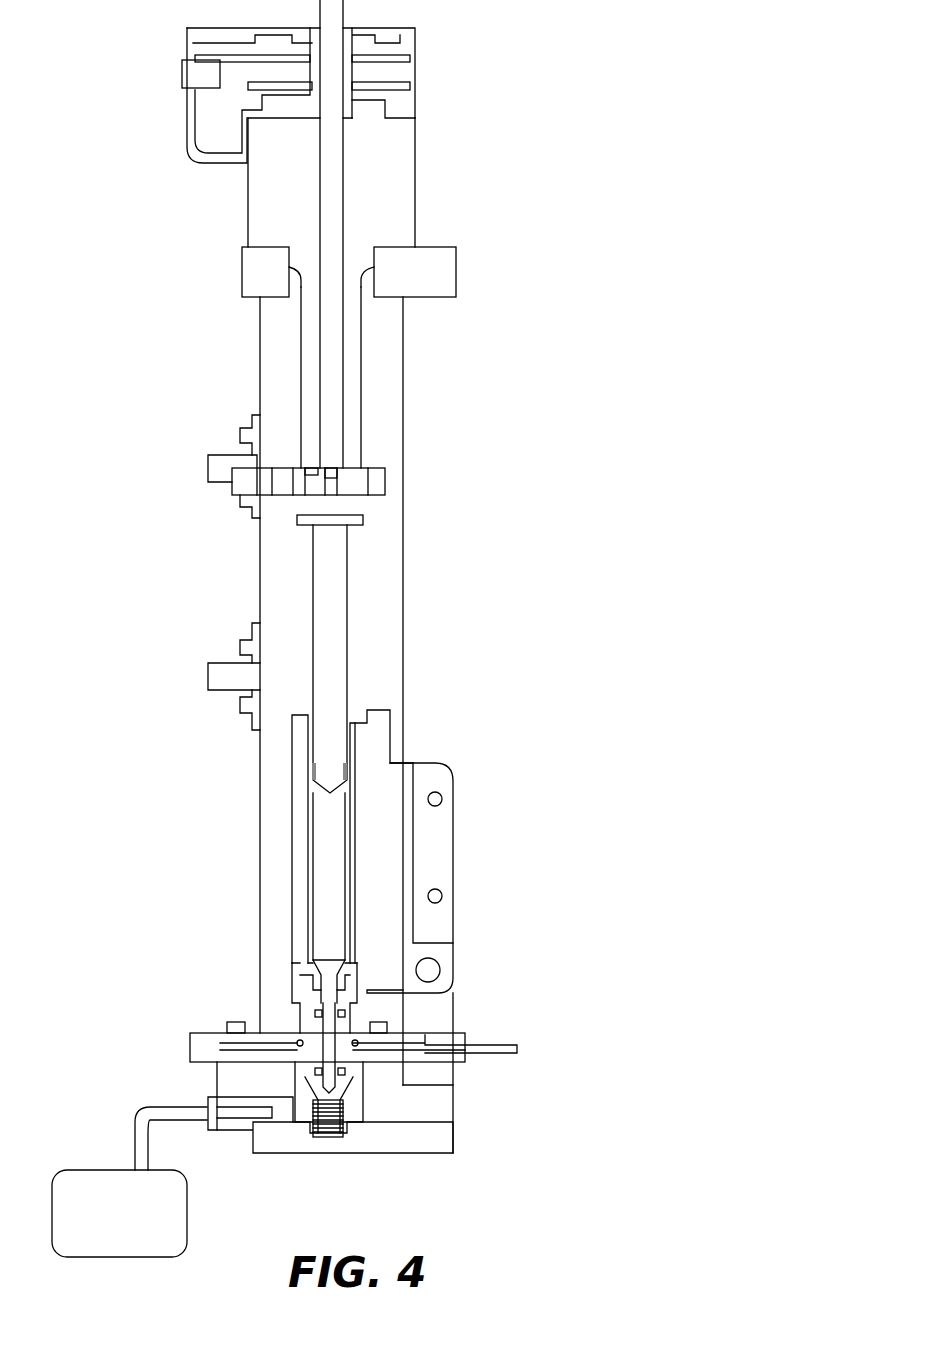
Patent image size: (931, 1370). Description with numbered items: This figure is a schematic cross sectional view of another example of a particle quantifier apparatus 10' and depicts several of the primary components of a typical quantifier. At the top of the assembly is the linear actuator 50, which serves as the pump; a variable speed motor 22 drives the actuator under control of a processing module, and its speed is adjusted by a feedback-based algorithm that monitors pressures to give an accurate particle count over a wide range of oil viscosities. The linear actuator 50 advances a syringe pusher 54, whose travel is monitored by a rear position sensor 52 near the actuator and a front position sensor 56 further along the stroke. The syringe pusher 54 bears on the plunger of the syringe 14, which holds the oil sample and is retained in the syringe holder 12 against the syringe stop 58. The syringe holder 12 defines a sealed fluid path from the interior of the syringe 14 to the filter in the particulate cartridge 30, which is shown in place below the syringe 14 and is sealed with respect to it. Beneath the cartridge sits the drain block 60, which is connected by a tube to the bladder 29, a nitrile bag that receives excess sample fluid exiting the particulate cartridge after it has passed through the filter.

The particle quantifier apparatus 10' is at (624, 340).
The syringe holder 12 is at (390, 838).
The syringe 14 is at (352, 748).
The variable speed motor 22 is at (430, 493).
The bladder 29 is at (133, 1219).
The particulate cartridge 30 is at (503, 1040).
The linear actuator 50 is at (390, 180).
The rear position sensor 52 is at (218, 468).
The syringe pusher 54 is at (305, 485).
The front position sensor 56 is at (220, 677).
The syringe stop 58 is at (308, 963).
The drain block 60 is at (440, 1133).